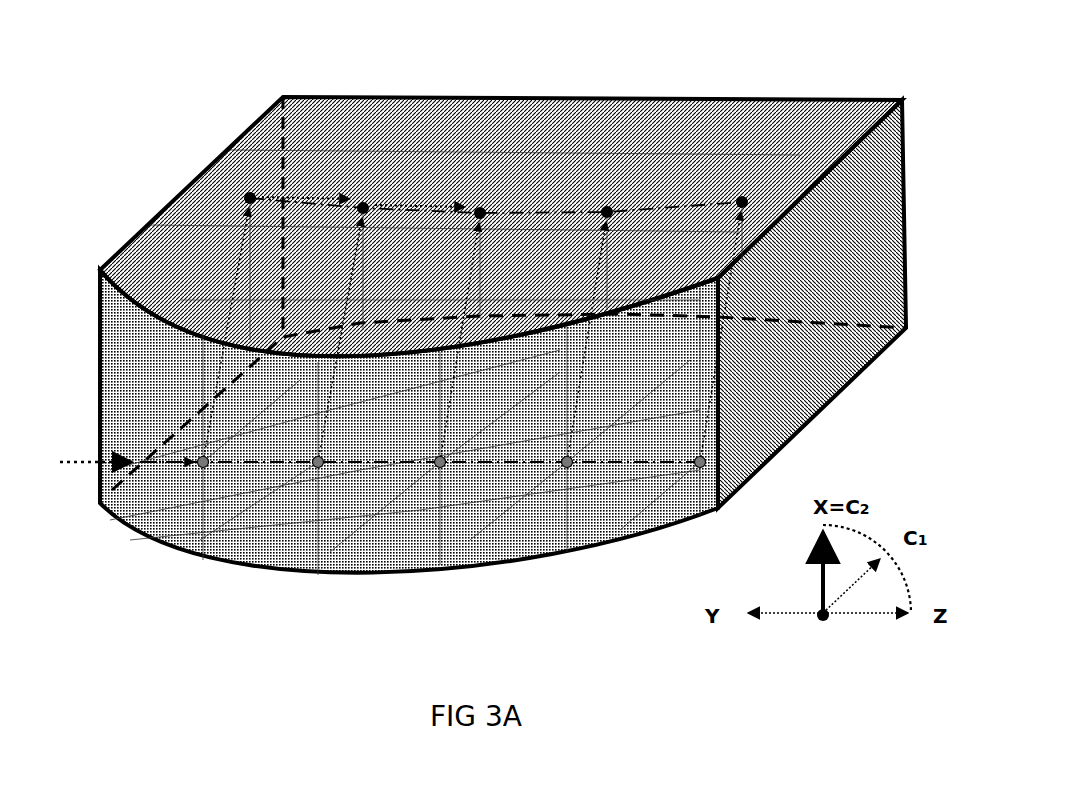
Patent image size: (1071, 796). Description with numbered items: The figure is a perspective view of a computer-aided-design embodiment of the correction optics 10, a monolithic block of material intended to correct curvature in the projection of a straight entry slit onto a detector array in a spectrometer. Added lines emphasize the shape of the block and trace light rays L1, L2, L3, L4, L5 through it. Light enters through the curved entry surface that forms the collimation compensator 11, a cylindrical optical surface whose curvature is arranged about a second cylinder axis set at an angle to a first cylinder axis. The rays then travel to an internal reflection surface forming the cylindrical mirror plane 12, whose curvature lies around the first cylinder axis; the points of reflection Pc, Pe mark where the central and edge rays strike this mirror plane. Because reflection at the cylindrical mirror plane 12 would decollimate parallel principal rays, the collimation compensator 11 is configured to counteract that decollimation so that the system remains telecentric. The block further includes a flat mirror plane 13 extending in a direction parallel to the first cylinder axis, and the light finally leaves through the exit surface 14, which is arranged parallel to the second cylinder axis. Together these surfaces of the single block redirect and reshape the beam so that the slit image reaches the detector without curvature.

The correction optics 10 is at (467, 338).
The collimation compensator 11 is at (352, 466).
The cylindrical mirror plane 12 is at (445, 478).
The flat mirror plane 13 is at (497, 182).
The exit surface 14 is at (626, 162).
The light ray L1 is at (111, 463).
The light ray L2 is at (165, 446).
The light ray L3 is at (209, 299).
The light ray L4 is at (314, 184).
The light ray L5 is at (432, 183).
The point of reflection Pc is at (415, 445).
The point of reflection Pe is at (676, 445).